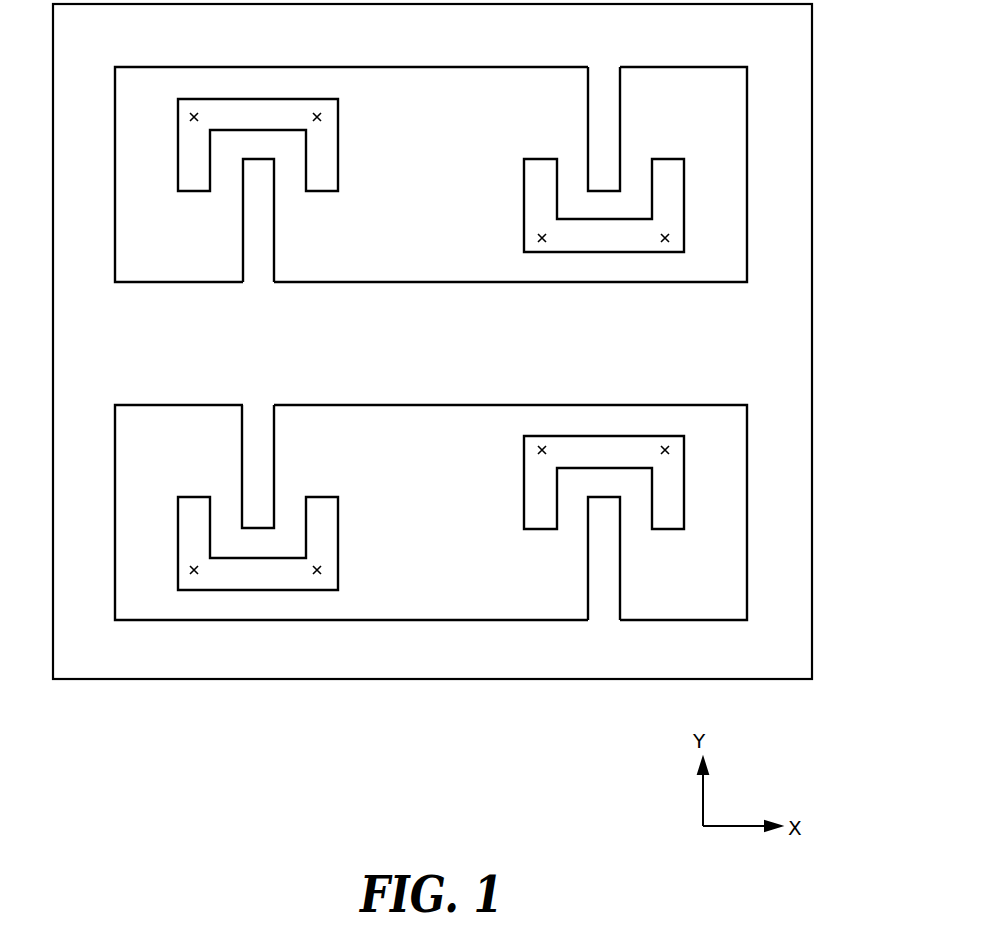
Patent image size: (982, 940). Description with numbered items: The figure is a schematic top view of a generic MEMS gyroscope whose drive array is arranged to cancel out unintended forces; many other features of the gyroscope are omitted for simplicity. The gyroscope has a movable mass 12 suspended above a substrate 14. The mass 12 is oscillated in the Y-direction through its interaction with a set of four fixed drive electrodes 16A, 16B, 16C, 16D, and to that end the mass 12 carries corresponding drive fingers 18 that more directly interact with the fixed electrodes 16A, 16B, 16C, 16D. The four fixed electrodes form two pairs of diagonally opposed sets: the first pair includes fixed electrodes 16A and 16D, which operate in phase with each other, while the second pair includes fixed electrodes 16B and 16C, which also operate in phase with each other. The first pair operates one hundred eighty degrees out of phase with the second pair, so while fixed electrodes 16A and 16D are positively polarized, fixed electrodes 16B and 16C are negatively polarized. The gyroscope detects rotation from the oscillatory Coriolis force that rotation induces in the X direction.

The movable mass 12 is at (763, 342).
The substrate 14 is at (452, 228).
The fixed drive electrode 16A is at (323, 182).
The fixed drive electrode 16B is at (538, 168).
The fixed drive electrode 16C is at (319, 507).
The fixed drive electrode 16D is at (537, 518).
The drive fingers 18 is at (258, 250).